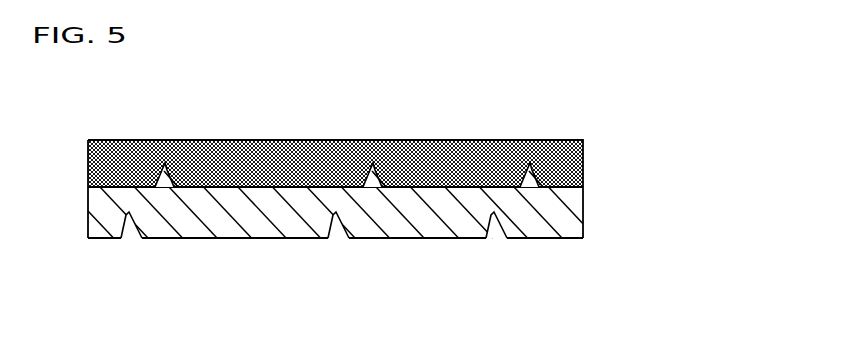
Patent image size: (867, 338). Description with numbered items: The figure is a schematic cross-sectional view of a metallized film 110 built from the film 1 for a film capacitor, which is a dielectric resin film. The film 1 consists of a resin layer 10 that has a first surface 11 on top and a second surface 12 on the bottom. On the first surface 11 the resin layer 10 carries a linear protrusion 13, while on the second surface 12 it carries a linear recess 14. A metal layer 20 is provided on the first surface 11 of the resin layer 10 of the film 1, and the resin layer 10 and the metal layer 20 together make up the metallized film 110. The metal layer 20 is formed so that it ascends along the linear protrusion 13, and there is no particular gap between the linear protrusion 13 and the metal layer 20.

The film for a film capacitor 1 is at (402, 196).
The metallized film 110 is at (402, 188).
The metal layer 20 is at (570, 163).
The resin layer 10 is at (368, 188).
The first surface 11 is at (458, 187).
The second surface 12 is at (438, 239).
The linear protrusion 13 is at (371, 165).
The linear recess 14 is at (337, 236).